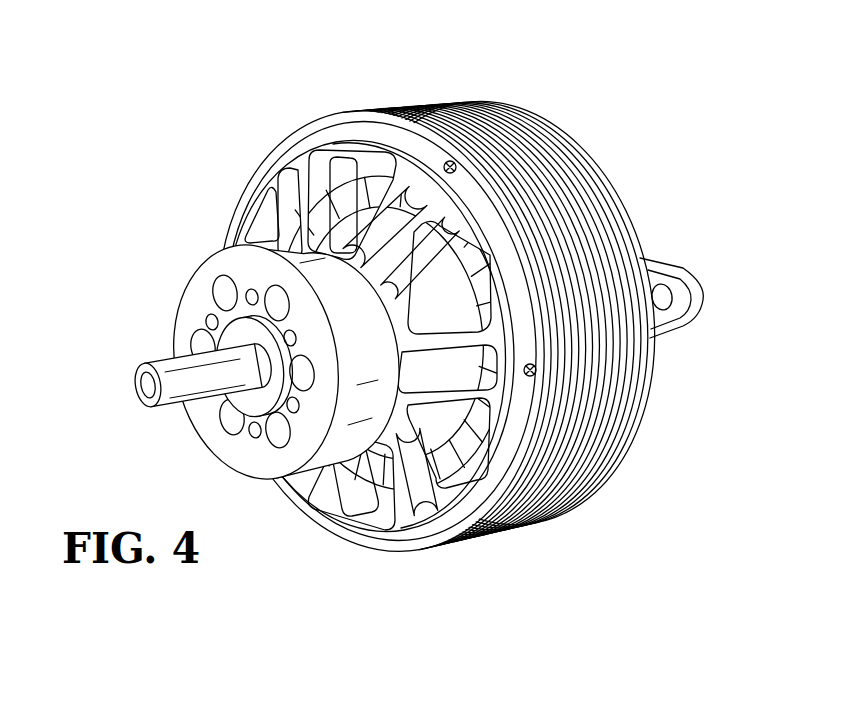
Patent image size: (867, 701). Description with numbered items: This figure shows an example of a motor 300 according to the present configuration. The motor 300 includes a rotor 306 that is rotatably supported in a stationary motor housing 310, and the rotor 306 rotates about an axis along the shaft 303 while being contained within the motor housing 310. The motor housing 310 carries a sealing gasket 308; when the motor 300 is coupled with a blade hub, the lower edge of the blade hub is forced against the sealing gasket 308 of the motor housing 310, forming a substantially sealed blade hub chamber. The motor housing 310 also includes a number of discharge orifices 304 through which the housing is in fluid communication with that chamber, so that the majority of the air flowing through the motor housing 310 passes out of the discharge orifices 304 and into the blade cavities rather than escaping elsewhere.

The motor 300 is at (397, 310).
The shaft 303 is at (148, 372).
The discharge orifices 304 is at (300, 204).
The rotor 306 is at (440, 293).
The sealing gasket 308 is at (442, 518).
The motor housing 310 is at (597, 427).